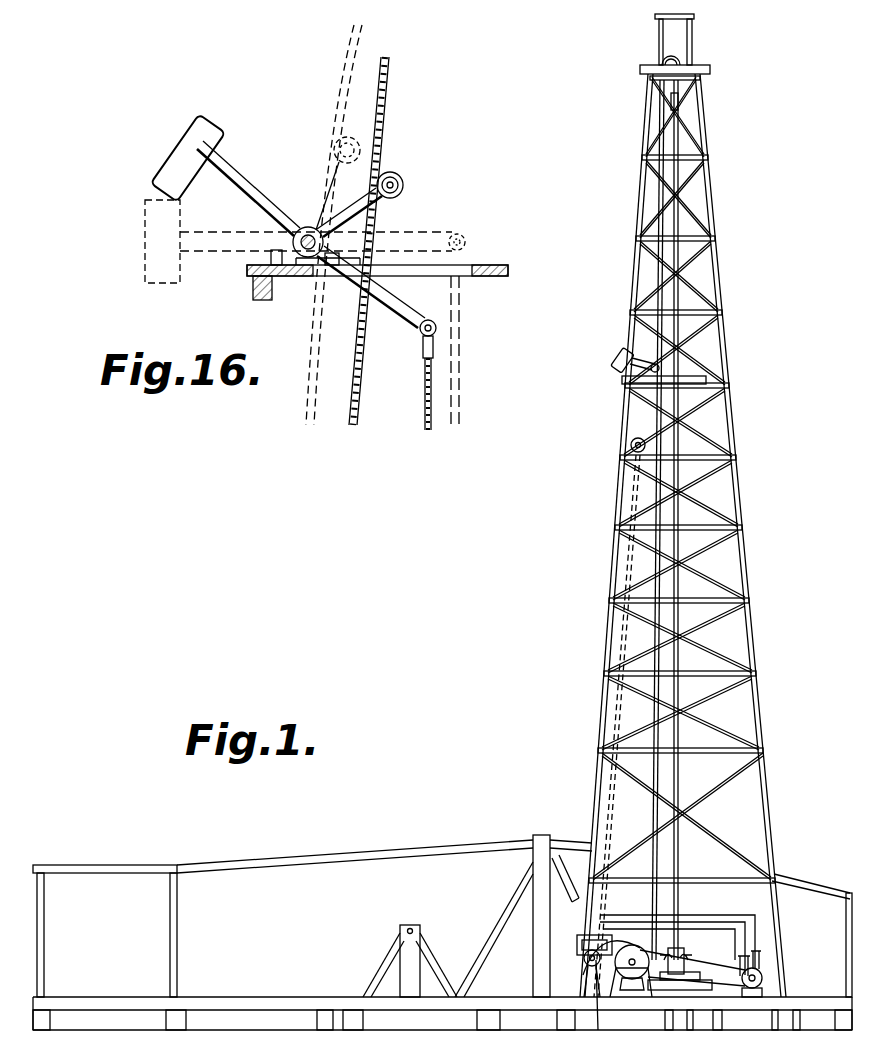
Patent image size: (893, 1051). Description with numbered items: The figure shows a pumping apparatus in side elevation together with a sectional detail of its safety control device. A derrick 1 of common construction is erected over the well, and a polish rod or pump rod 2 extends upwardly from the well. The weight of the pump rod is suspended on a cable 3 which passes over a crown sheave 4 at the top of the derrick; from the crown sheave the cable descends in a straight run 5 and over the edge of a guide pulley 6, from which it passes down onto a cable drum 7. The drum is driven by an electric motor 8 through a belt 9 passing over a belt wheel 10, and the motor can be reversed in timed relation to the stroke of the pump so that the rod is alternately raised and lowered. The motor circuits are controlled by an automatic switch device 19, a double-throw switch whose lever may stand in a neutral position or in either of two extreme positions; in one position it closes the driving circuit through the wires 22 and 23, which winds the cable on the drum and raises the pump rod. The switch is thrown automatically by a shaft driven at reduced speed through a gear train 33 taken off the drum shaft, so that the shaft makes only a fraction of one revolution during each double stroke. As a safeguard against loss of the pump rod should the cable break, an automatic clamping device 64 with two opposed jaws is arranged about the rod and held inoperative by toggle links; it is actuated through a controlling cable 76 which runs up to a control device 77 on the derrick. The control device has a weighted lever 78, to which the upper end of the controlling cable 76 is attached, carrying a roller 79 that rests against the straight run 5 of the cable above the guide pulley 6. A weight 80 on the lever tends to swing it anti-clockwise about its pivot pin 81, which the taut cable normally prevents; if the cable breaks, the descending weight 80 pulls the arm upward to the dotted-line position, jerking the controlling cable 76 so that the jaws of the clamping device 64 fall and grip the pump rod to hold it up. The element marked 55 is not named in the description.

In FIG. 1, the derrick 1 is at (761, 708).
In FIG. 1, the pump rod 2 is at (682, 860).
In FIG. 1, the cable 3 is at (699, 81).
In FIG. 1, the crown sheave 4 is at (664, 60).
In FIG. 16, the run 5 is at (391, 101).
In FIG. 1, the run 5 is at (650, 187).
In FIG. 1, the guide pulley 6 is at (631, 444).
In FIG. 1, the cable drum 7 is at (620, 970).
In FIG. 1, the electric motor 8 is at (766, 974).
In FIG. 1, the belt 9 is at (717, 970).
In FIG. 1, the belt wheel 10 is at (638, 980).
In FIG. 1, the automatic switch device 19 is at (590, 958).
In FIG. 1, the wire 22 is at (744, 952).
In FIG. 1, the wire 23 is at (754, 962).
In FIG. 1, the gear train 33 is at (596, 963).
In FIG. 1, the control panel 55 is at (595, 940).
In FIG. 1, the automatic clamping device 64 is at (684, 950).
In FIG. 16, the controlling cable 76 is at (427, 411).
In FIG. 16, the control device 77 is at (308, 219).
In FIG. 1, the control device 77 is at (624, 380).
In FIG. 16, the weighted lever 78 is at (406, 321).
In FIG. 16, the roller 79 is at (402, 184).
In FIG. 16, the weight 80 is at (207, 143).
In FIG. 1, the weight 80 is at (619, 359).
In FIG. 16, the pivot pin 81 is at (306, 256).